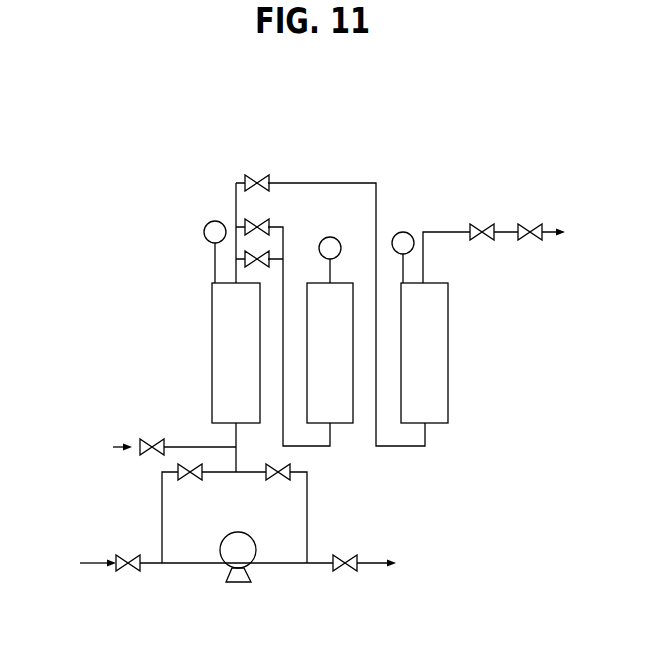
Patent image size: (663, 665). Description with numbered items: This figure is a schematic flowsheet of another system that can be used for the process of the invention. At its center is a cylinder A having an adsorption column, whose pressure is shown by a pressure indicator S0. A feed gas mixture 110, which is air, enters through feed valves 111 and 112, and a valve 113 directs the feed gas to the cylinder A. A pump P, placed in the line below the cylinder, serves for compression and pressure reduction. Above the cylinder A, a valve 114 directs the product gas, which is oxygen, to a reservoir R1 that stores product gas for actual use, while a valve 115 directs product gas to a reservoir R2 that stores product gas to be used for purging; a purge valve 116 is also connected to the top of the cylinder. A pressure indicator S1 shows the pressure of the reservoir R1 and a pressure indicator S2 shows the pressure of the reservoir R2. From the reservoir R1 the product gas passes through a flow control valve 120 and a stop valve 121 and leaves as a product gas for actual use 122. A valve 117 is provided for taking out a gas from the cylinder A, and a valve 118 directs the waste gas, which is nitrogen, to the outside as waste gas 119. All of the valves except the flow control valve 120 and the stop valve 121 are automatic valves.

The feed gas mixture 110 is at (89, 505).
The feed valve 111 is at (150, 438).
The feed valve 112 is at (128, 572).
The valve for directing the feed gas to the cylinder 113 is at (278, 480).
The valve for directing product gas to reservoir R1 114 is at (259, 181).
The valve for directing product gas to reservoir R2 115 is at (262, 226).
The purge valve 116 is at (256, 263).
The valve for taking out a gas from the cylinder 117 is at (191, 480).
The valve for directing waste gas to outside 118 is at (345, 572).
The waste gas 119 is at (418, 563).
The flow control valve 120 is at (482, 241).
The stop valve 121 is at (530, 241).
The product gas for actual use 122 is at (593, 232).
The pressure indicator for the cylinder S0 is at (205, 231).
The pressure indicator for reservoir R1 S1 is at (410, 238).
The pressure indicator for reservoir R2 S2 is at (339, 240).
The cylinder A is at (236, 353).
The reservoir R1 is at (424, 353).
The reservoir R2 is at (330, 353).
The pump P is at (253, 566).